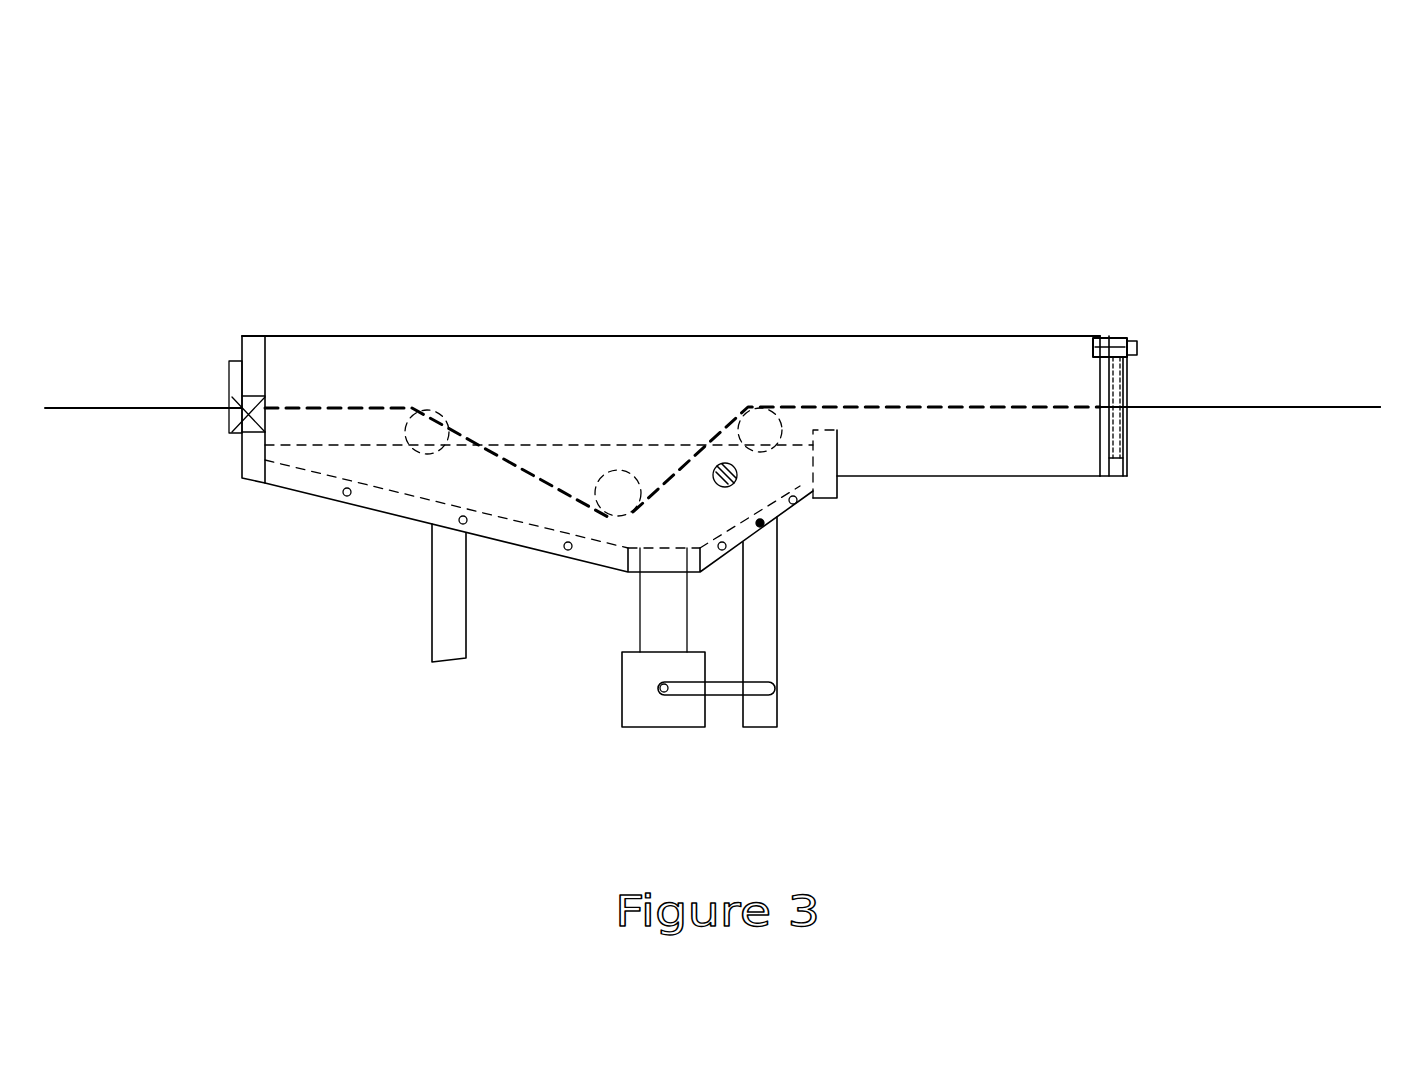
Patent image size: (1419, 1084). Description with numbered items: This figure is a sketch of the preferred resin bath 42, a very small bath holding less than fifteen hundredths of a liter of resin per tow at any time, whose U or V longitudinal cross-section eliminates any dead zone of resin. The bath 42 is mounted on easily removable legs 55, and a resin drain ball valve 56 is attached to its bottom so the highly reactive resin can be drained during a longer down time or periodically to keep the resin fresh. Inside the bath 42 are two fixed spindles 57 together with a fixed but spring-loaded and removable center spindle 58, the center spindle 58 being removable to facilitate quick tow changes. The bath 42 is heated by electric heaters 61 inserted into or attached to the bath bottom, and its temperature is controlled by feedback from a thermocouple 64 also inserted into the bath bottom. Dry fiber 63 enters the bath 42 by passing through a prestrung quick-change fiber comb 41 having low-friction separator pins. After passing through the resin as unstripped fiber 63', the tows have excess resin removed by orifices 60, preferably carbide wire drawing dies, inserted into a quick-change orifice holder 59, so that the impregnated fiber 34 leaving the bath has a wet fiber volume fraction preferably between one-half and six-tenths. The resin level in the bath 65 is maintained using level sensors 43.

The impregnated fiber 34 is at (228, 407).
The quick-change fiber comb 41 is at (1117, 336).
The resin bath 42 is at (398, 336).
The level sensors 43 is at (740, 468).
The removable legs 55 is at (432, 591).
The resin drain ball valve 56 is at (621, 688).
The fixed spindles 57 is at (427, 430).
The center spindle 58 is at (618, 493).
The quick-change orifice holder 59 is at (257, 336).
The orifices 60 is at (242, 412).
The electric heaters 61 is at (564, 548).
The dry fiber 63 is at (1253, 329).
The unstripped fibers 63' is at (680, 323).
The thermocouple 64 is at (760, 523).
The resin level in the bath 65 is at (593, 445).